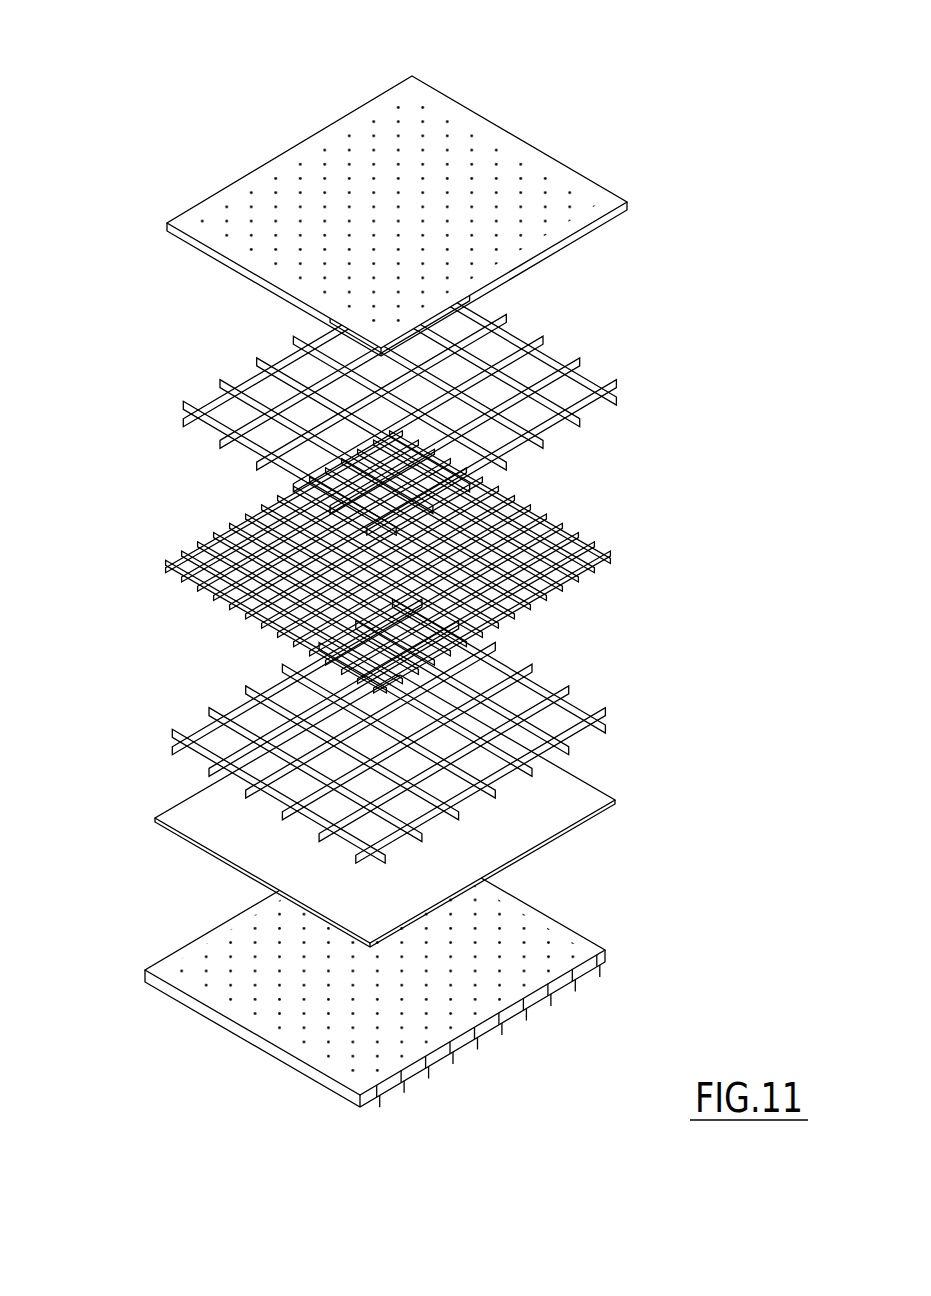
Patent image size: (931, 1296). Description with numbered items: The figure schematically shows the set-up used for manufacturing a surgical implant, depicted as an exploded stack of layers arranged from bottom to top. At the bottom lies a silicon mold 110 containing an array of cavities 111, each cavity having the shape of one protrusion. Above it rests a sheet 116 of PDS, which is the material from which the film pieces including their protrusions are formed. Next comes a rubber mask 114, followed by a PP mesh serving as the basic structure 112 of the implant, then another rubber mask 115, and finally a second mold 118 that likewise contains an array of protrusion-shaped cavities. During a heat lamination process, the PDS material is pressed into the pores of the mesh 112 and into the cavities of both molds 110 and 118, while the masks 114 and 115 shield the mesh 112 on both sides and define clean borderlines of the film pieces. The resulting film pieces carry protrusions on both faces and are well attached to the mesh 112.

The silicon mold 110 is at (230, 1027).
The cavities 111 is at (203, 970).
The PP mesh (basic structure) 112 is at (558, 527).
The rubber mask 114 is at (203, 725).
The rubber mask 115 is at (266, 387).
The sheet of PDS 116 is at (530, 827).
The second mold 118 is at (490, 123).